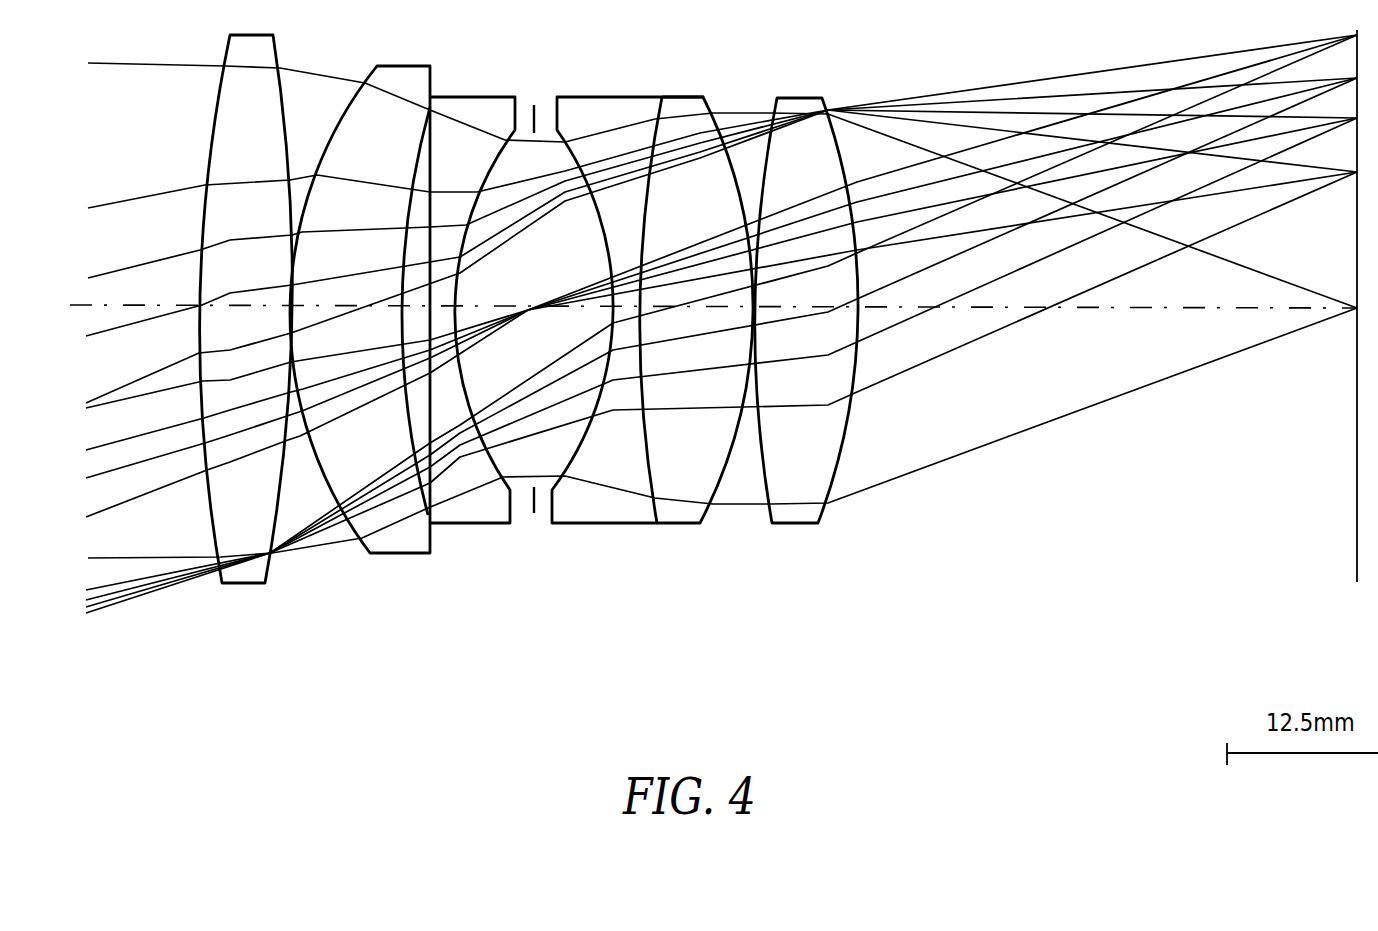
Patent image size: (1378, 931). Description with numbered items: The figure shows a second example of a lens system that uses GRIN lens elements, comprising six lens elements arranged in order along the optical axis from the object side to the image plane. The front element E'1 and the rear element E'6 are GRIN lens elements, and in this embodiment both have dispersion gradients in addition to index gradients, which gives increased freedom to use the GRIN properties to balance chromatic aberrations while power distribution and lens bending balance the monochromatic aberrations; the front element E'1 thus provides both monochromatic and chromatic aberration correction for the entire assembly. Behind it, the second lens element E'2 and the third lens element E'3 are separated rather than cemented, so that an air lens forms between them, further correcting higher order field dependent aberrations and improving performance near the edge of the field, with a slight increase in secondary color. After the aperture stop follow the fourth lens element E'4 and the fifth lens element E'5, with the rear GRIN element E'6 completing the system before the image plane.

The front GRIN lens element E'1 is at (246, 348).
The second lens element E'2 is at (360, 349).
The third lens element E'3 is at (472, 350).
The fourth lens element E'4 is at (627, 350).
The fifth lens element E'5 is at (705, 350).
The rear GRIN lens element E'6 is at (806, 351).